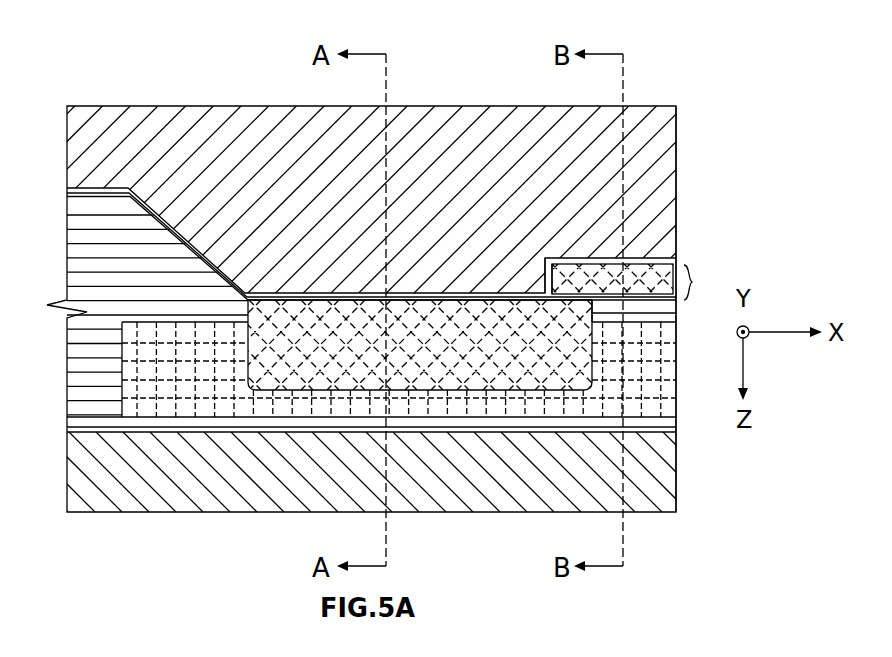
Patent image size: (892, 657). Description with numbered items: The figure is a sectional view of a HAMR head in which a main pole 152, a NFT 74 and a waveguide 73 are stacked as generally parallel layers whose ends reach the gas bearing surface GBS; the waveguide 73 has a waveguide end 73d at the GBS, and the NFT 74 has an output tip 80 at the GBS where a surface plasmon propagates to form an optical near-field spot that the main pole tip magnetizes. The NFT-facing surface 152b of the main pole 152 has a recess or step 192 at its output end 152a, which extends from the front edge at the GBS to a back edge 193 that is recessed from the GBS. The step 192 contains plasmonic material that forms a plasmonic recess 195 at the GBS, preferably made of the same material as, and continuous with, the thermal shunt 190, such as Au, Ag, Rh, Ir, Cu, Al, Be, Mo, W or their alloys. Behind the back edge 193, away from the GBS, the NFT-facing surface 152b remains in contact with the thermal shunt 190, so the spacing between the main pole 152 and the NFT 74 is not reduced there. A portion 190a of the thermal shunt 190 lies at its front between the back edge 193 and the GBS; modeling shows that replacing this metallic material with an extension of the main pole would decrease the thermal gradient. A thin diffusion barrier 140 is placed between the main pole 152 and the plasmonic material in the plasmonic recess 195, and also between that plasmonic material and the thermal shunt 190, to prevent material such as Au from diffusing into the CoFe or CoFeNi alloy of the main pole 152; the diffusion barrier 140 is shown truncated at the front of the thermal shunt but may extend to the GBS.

The main pole 152 is at (663, 138).
The gas bearing surface GBS is at (678, 192).
The output end 152a is at (677, 237).
The NFT-facing surface 152b is at (346, 294).
The plasmonic recess 195 is at (676, 264).
The step 192 is at (692, 282).
The back edge 193 is at (571, 264).
The diffusion barrier 140 is at (363, 306).
The NFT 74 is at (172, 337).
The output tip 80 is at (660, 372).
The thermal shunt 190 is at (296, 376).
The portion of thermal shunt 190a is at (573, 312).
The waveguide end 73d is at (676, 472).
The waveguide 73 is at (507, 493).